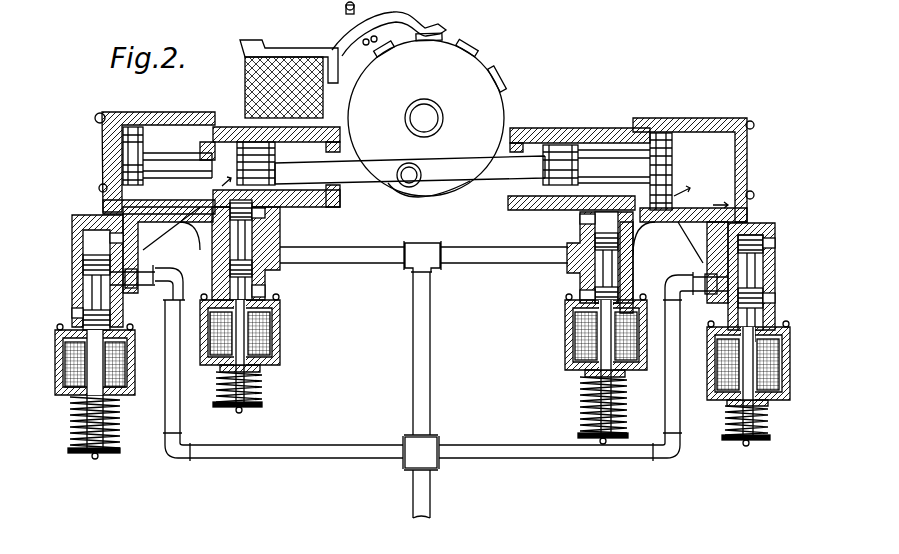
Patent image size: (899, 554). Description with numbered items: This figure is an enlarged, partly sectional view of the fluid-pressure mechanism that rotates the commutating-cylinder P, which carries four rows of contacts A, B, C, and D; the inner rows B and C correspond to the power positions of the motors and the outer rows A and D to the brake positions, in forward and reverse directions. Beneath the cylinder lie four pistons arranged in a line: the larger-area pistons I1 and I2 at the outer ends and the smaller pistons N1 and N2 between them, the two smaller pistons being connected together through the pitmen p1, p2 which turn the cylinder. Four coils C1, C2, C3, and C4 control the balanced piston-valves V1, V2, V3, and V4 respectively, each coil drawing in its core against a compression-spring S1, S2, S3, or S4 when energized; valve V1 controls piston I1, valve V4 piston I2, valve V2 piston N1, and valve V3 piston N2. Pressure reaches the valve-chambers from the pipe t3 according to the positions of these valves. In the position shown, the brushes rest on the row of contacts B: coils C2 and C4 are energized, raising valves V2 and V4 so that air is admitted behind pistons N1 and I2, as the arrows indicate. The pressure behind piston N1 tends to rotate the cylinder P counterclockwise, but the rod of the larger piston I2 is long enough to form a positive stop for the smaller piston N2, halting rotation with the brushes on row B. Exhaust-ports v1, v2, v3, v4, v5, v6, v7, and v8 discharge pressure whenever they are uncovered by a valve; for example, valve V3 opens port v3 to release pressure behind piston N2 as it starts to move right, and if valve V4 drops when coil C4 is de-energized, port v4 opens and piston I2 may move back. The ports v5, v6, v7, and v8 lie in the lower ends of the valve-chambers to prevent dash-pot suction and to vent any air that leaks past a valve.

The piston I1 is at (148, 120).
The piston N1 is at (234, 155).
The row of contacts A is at (397, 46).
The row of contacts B is at (412, 41).
The row of contacts C is at (462, 50).
The row of contacts D is at (497, 80).
The commutating-cylinder P is at (480, 108).
The piston N2 is at (562, 150).
The piston I2 is at (687, 133).
The pitman p1 is at (390, 176).
The pitman p2 is at (511, 170).
The exhaust-port v1 is at (72, 233).
The piston-valve V1 is at (72, 288).
The exhaust-port v8 is at (72, 315).
The coil C1 is at (70, 378).
The compression-spring S1 is at (118, 446).
The exhaust-port v2 is at (265, 214).
The piston-valve V2 is at (263, 230).
The exhaust-port v7 is at (262, 298).
The coil C2 is at (257, 348).
The compression-spring S2 is at (260, 396).
The exhaust-port v3 is at (581, 217).
The piston-valve V3 is at (600, 244).
The exhaust-port v6 is at (597, 297).
The coil C3 is at (591, 363).
The compression-spring S3 is at (595, 408).
The exhaust-port v4 is at (762, 244).
The piston-valve V4 is at (762, 257).
The exhaust-port v5 is at (772, 332).
The coil C4 is at (735, 378).
The compression-spring S4 is at (724, 422).
The pipe t3 is at (421, 499).